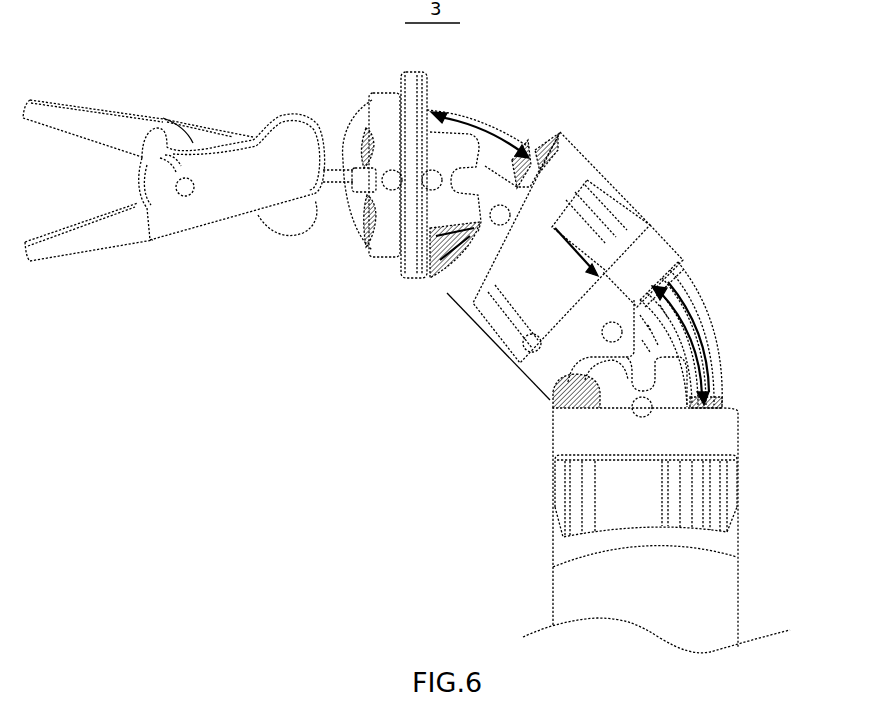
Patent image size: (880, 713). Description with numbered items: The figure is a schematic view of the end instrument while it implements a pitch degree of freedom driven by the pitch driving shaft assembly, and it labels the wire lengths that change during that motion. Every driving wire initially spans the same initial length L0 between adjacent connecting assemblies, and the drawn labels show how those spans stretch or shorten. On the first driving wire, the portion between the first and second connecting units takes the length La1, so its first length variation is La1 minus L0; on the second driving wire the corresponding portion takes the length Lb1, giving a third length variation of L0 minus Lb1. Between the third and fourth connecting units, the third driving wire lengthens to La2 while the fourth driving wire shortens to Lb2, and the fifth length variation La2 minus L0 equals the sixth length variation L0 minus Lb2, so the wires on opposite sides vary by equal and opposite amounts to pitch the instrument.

The length of the first driving wire portion between the first and second connecting La1 is at (495, 118).
The initial length of the driving wire between adjacent connecting assemblies L0 is at (550, 317).
The length of the third driving wire portion between the third and fourth connecting La2 is at (707, 350).
The length of the second driving wire portion between the first and second connectin Lb1 is at (463, 223).
The length of the fourth driving wire portion between the third and fourth connectin Lb2 is at (567, 400).